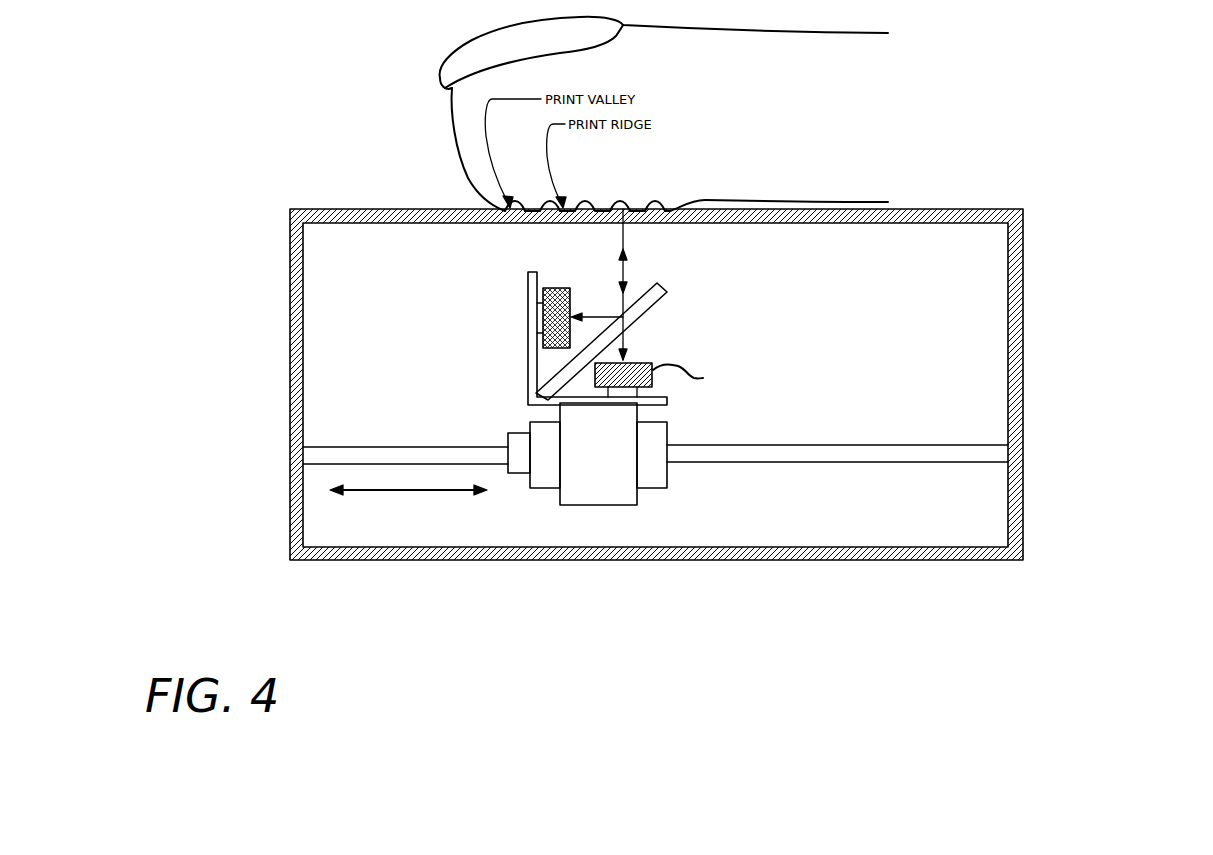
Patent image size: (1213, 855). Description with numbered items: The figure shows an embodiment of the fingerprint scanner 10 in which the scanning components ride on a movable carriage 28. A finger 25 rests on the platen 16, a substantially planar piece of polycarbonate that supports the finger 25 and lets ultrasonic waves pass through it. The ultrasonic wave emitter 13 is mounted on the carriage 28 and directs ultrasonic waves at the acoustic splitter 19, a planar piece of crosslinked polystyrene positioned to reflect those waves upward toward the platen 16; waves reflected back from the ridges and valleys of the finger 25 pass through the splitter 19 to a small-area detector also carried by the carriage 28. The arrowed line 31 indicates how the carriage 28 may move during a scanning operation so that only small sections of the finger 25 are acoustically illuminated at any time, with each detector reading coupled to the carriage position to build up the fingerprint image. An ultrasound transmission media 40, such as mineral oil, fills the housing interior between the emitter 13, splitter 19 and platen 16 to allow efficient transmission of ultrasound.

The fingerprint scanner 10 is at (1075, 290).
The ultrasonic wave emitter 13 is at (555, 290).
The platen 16 is at (963, 209).
The acoustic splitter 19 is at (650, 305).
The finger 25 is at (452, 117).
The movable carriage 28 is at (667, 478).
The arrowed line 31 is at (400, 493).
The ultrasound transmission media 40 is at (861, 290).